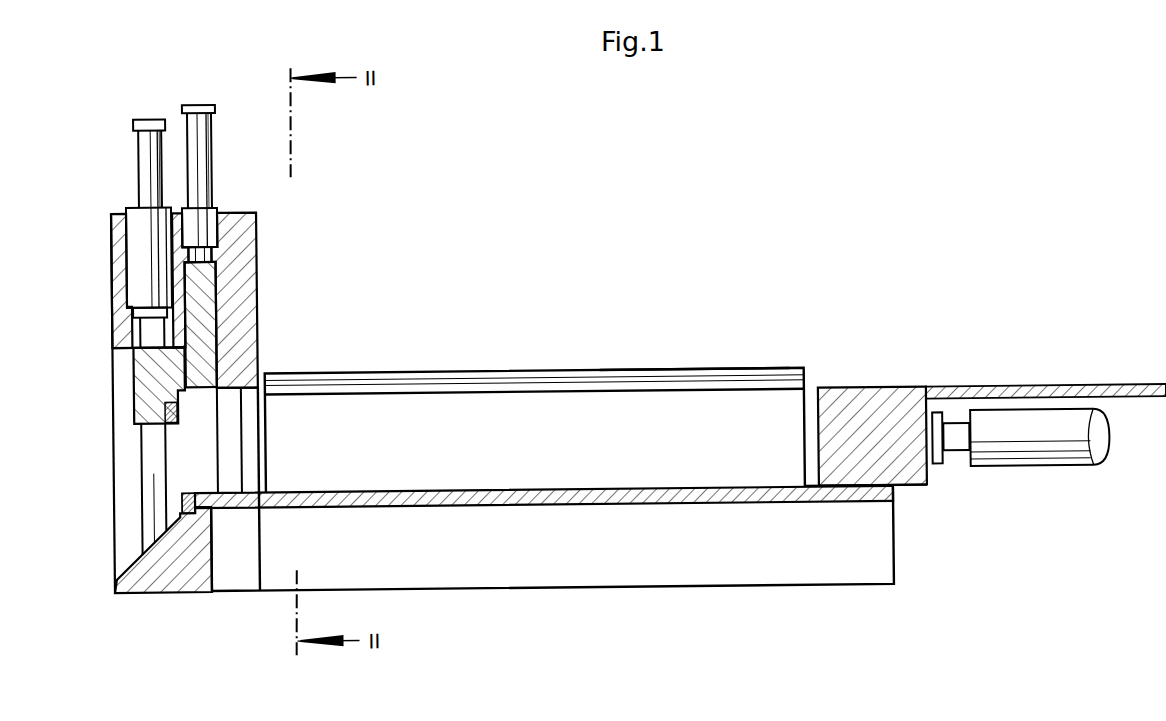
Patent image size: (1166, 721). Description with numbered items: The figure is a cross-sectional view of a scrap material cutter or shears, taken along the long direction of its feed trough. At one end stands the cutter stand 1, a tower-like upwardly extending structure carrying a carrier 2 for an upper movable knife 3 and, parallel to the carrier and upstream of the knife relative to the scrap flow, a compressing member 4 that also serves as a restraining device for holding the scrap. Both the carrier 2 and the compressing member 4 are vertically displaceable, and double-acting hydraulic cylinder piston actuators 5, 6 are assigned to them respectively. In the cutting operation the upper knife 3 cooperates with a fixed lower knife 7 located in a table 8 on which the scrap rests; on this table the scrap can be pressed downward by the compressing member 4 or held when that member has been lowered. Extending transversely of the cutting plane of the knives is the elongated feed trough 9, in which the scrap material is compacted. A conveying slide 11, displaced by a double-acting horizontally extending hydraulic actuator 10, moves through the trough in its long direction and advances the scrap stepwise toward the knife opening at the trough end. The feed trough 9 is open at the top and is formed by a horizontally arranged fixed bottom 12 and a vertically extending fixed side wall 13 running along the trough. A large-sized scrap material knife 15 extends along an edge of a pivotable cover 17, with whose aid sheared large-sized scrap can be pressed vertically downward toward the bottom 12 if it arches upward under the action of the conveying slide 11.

The cutter stand 1 is at (259, 265).
The carrier 2 is at (140, 388).
The upper movable knife 3 is at (140, 421).
The compressing member 4 is at (206, 342).
The hydraulic cylinder piston actuator 5 is at (153, 116).
The hydraulic cylinder piston actuator 6 is at (208, 101).
The fixed lower knife 7 is at (183, 495).
The table 8 is at (205, 490).
The feed trough 9 is at (645, 459).
The hydraulic actuator 10 is at (1082, 446).
The conveying slide 11 is at (872, 406).
The fixed bottom 12 is at (550, 487).
The fixed side wall 13 is at (443, 401).
The large-sized scrap material knife 15 is at (587, 378).
The cover 17 is at (696, 366).